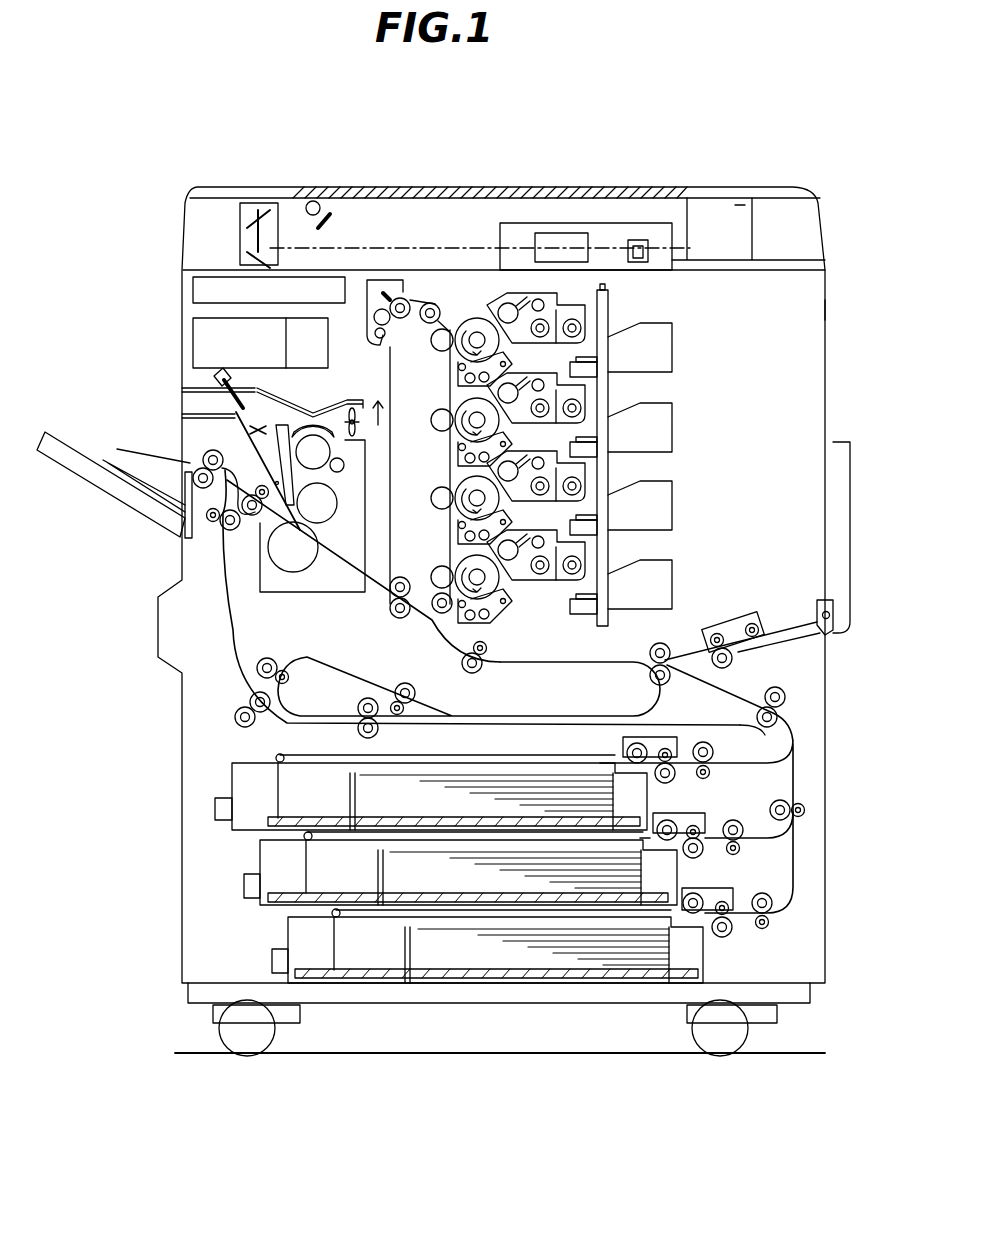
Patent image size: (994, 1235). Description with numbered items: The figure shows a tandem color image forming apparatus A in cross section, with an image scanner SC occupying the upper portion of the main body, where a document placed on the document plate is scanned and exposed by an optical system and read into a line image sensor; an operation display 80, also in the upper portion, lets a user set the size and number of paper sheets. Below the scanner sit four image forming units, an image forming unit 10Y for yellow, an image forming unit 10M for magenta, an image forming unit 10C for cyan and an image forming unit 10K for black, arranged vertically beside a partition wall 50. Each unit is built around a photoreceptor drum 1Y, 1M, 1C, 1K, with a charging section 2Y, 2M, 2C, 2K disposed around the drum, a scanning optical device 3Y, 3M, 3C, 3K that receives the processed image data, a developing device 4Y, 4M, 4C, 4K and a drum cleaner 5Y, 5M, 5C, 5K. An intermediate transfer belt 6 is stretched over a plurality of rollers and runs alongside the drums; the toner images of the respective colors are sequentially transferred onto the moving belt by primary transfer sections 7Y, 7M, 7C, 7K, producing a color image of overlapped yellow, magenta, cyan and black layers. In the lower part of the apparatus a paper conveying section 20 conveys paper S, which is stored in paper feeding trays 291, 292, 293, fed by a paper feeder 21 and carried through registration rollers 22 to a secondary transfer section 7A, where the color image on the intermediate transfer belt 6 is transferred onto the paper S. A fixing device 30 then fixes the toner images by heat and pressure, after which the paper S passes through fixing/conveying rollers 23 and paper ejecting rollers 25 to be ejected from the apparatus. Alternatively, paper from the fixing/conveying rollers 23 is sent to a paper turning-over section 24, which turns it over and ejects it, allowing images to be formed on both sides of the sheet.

The image scanner SC is at (751, 234).
The operation display 80 is at (745, 270).
The image forming apparatus A is at (836, 378).
The image forming unit 10Y is at (754, 333).
The image forming unit 10M is at (754, 413).
The image forming unit 10C is at (754, 493).
The image forming unit 10K is at (754, 568).
The photoreceptor drum 1Y is at (470, 322).
The photoreceptor drum 1M is at (466, 412).
The photoreceptor drum 1C is at (466, 490).
The photoreceptor drum 1K is at (466, 569).
The charging section 2Y is at (512, 357).
The charging section 2M is at (512, 437).
The charging section 2C is at (512, 515).
The charging section 2K is at (512, 594).
The scanning optical device 3Y is at (672, 333).
The scanning optical device 3M is at (672, 414).
The scanning optical device 3C is at (672, 492).
The scanning optical device 3K is at (672, 570).
The developing device 4Y is at (557, 297).
The developing device 4M is at (585, 410).
The developing device 4C is at (585, 488).
The developing device 4K is at (585, 567).
The drum cleaner 5Y is at (457, 380).
The drum cleaner 5M is at (457, 460).
The drum cleaner 5C is at (457, 538).
The drum cleaner 5K is at (492, 614).
The primary transfer section 7Y is at (430, 312).
The primary transfer section 7M is at (433, 416).
The primary transfer section 7C is at (433, 497).
The primary transfer section 7K is at (433, 576).
The intermediate transfer belt 6 is at (390, 372).
The secondary transfer section 7A is at (400, 620).
The partition wall 50 is at (608, 322).
The paper conveying section 20 is at (745, 683).
The paper feeder 21 is at (667, 740).
The registration rollers 22 is at (478, 672).
The fixing/conveying rollers 23 is at (252, 518).
The paper turning-over section 24 is at (206, 586).
The paper ejecting rollers 25 is at (205, 452).
The fixing device 30 is at (325, 601).
The paper S is at (563, 772).
The paper feeding tray 291 is at (230, 784).
The paper feeding tray 292 is at (260, 853).
The paper feeding tray 293 is at (288, 933).